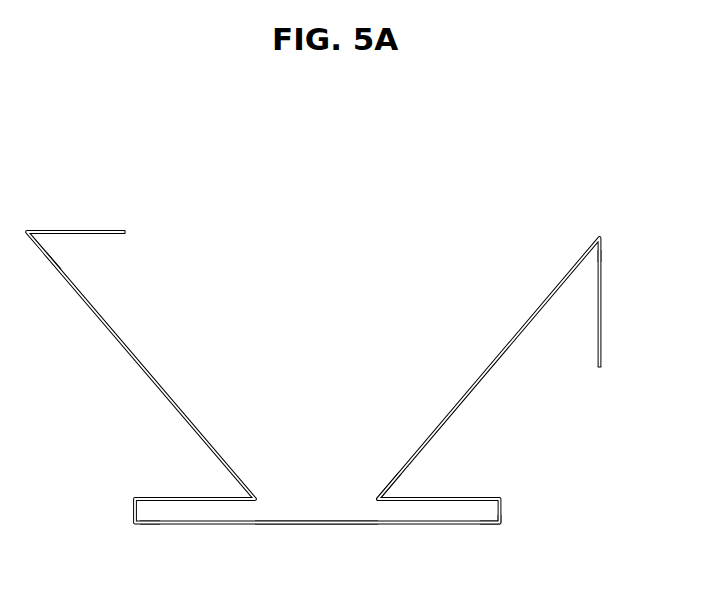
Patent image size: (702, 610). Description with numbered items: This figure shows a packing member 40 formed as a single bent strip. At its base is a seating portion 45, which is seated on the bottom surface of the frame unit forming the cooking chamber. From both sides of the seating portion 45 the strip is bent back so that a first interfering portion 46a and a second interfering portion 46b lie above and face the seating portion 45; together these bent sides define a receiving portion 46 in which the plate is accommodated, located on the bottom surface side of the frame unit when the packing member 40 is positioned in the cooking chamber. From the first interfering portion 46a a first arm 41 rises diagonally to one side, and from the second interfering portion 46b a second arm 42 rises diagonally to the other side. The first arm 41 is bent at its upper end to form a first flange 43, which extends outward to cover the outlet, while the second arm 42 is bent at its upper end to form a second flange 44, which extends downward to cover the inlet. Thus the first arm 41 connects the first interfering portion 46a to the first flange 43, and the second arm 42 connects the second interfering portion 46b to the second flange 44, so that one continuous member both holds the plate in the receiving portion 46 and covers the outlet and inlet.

The packing member 40 is at (43, 174).
The first arm 41 is at (118, 337).
The second arm 42 is at (507, 337).
The first flange 43 is at (87, 230).
The second flange 44 is at (603, 308).
The seating portion 45 is at (328, 526).
The receiving portion 46 is at (317, 512).
The first interfering portion 46a is at (163, 497).
The second interfering portion 46b is at (468, 497).